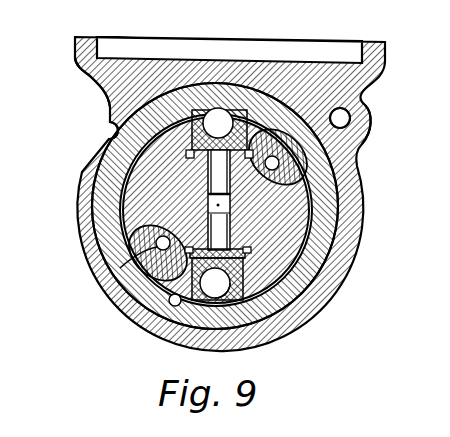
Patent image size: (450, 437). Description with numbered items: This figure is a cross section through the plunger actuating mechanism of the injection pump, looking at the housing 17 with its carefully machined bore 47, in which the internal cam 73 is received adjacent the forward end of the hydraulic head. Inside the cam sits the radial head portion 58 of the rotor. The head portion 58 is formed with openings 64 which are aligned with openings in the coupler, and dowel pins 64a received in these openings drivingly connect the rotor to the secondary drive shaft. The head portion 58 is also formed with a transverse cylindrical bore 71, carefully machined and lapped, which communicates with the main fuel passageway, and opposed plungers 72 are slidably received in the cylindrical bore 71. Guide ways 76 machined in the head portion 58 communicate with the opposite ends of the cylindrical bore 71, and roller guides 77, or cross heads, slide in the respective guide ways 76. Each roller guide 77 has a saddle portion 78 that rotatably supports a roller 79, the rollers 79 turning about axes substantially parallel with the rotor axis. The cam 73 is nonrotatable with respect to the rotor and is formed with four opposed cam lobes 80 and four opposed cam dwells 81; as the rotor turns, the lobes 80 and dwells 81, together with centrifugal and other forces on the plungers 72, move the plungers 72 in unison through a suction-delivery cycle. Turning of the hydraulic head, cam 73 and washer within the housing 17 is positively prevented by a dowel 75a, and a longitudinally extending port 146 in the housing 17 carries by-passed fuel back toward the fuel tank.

The housing 17 is at (108, 116).
The bore 47 is at (112, 128).
The radial head portion 58 is at (157, 247).
The openings 64 is at (128, 286).
The dowel pins 64a is at (160, 246).
The cylindrical bore 71 is at (210, 200).
The plungers 72 is at (213, 170).
The internal cam 73 is at (288, 110).
The dowel 75a is at (190, 254).
The guide ways 76 is at (175, 307).
The roller guides 77 is at (205, 273).
The saddle portion 78 is at (229, 280).
The roller 79 is at (218, 298).
The cam lobes 80 is at (300, 238).
The cam dwells 81 is at (275, 292).
The port 146 is at (350, 117).